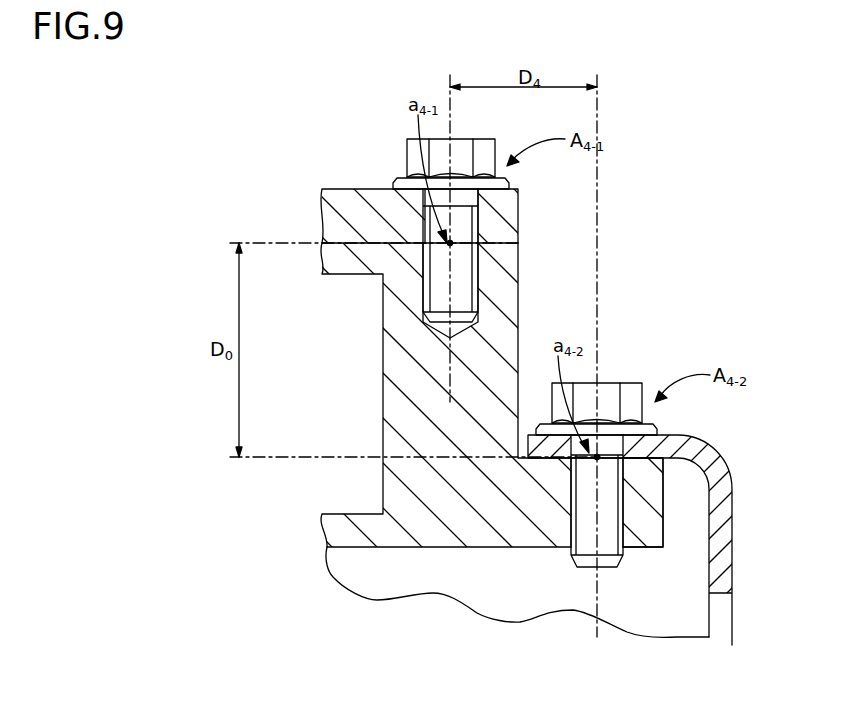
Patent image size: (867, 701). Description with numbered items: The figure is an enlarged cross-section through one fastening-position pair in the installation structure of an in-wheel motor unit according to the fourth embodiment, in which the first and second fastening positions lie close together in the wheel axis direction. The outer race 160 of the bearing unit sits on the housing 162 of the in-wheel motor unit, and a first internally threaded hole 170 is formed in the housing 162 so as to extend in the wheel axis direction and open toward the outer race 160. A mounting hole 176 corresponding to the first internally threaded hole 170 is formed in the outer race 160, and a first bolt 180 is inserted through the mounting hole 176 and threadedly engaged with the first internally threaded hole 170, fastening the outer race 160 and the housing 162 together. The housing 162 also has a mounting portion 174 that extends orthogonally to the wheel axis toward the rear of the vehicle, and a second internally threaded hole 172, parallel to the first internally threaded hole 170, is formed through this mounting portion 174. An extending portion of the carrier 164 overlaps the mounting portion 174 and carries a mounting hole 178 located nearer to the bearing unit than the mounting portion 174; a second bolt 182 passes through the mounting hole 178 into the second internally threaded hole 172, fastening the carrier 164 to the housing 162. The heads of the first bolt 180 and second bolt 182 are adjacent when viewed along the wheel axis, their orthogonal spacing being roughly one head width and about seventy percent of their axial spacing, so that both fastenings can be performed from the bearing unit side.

The outer race 160 is at (345, 200).
The housing 162 is at (497, 311).
The carrier 164 is at (378, 581).
The first internally threaded hole 170 is at (478, 270).
The second internally threaded hole 172 is at (571, 487).
The mounting portion 174 is at (637, 527).
The mounting hole 176 is at (478, 231).
The mounting hole 178 is at (624, 463).
The first bolt 180 is at (458, 145).
The second bolt 182 is at (607, 394).